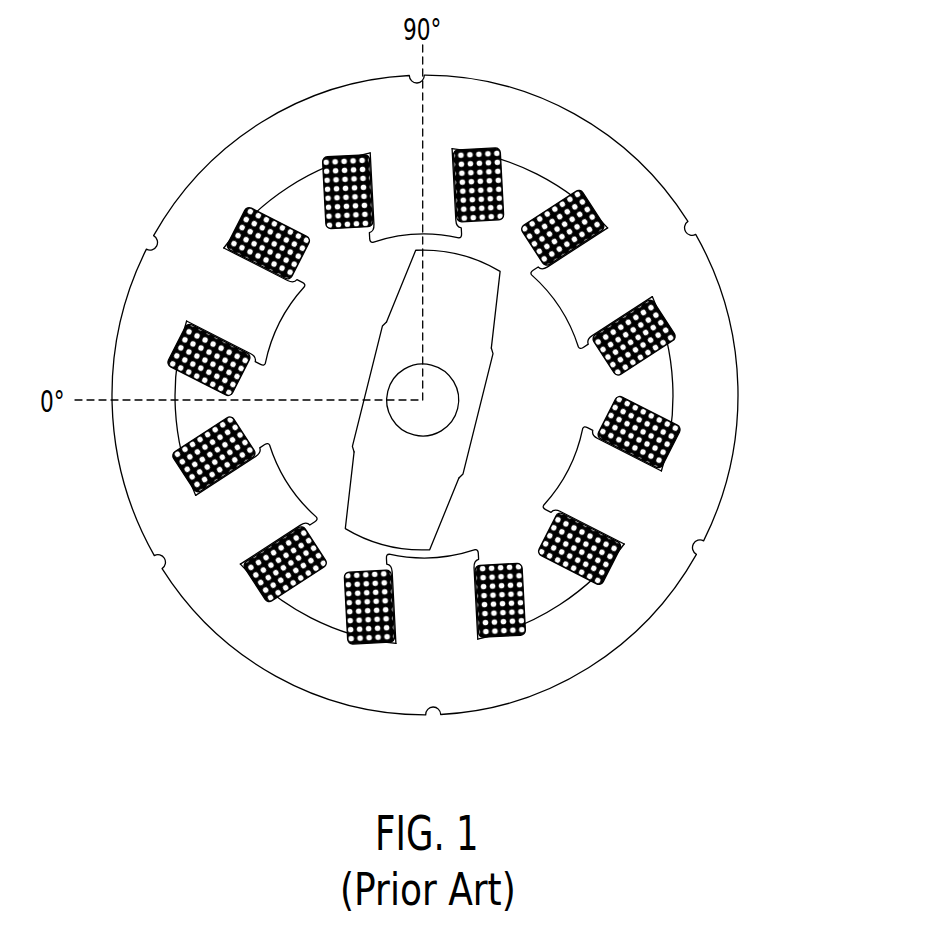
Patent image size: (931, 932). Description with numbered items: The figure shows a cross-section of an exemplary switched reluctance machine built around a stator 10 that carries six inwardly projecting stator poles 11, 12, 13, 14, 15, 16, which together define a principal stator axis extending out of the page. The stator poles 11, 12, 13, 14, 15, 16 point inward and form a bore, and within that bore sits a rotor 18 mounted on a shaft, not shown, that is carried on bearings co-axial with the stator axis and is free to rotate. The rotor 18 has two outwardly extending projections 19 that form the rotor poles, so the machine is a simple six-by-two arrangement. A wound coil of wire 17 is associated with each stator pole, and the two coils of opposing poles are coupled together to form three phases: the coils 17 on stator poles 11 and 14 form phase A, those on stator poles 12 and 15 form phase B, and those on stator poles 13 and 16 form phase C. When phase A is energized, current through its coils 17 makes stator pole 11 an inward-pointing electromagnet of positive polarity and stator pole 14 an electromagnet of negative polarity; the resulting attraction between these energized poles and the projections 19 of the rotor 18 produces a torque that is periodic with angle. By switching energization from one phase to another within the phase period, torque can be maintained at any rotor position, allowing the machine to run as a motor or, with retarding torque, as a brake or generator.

The stator 10 is at (178, 192).
The stator pole 11 is at (397, 230).
The stator pole 12 is at (570, 310).
The stator pole 13 is at (580, 487).
The stator pole 14 is at (417, 570).
The stator pole 15 is at (235, 510).
The stator pole 16 is at (270, 322).
The wound coil of wire 17 is at (500, 190).
The rotor 18 is at (493, 353).
The outwardly extending projections 19 is at (443, 273).